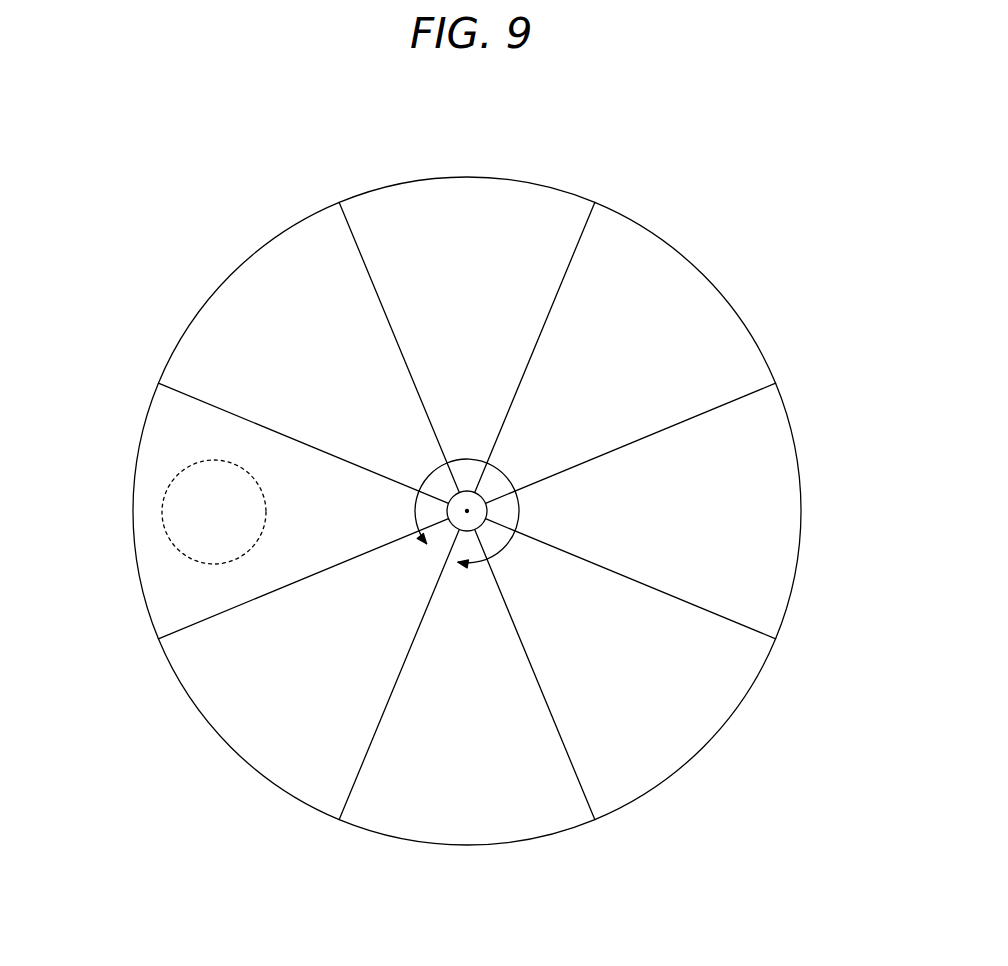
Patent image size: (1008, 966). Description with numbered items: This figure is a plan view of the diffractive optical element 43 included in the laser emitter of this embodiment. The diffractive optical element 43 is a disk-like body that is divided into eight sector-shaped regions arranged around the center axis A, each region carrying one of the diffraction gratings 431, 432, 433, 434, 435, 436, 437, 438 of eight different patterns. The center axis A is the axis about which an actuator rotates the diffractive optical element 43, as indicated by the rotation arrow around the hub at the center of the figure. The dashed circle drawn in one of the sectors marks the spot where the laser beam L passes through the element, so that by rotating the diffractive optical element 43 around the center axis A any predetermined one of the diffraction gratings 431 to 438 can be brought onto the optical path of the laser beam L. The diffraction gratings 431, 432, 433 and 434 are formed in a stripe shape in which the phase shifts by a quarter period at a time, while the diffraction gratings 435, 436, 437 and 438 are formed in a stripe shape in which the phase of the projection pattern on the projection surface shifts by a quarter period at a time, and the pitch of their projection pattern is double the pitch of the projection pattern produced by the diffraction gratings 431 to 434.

The diffractive optical element 43 is at (715, 268).
The diffraction grating 431 is at (788, 508).
The diffraction grating 432 is at (686, 733).
The diffraction grating 433 is at (545, 820).
The diffraction grating 434 is at (253, 718).
The diffraction grating 435 is at (162, 437).
The diffraction grating 436 is at (233, 308).
The diffraction grating 437 is at (455, 195).
The diffraction grating 438 is at (641, 257).
The center axis A is at (467, 511).
The laser beam L is at (190, 526).